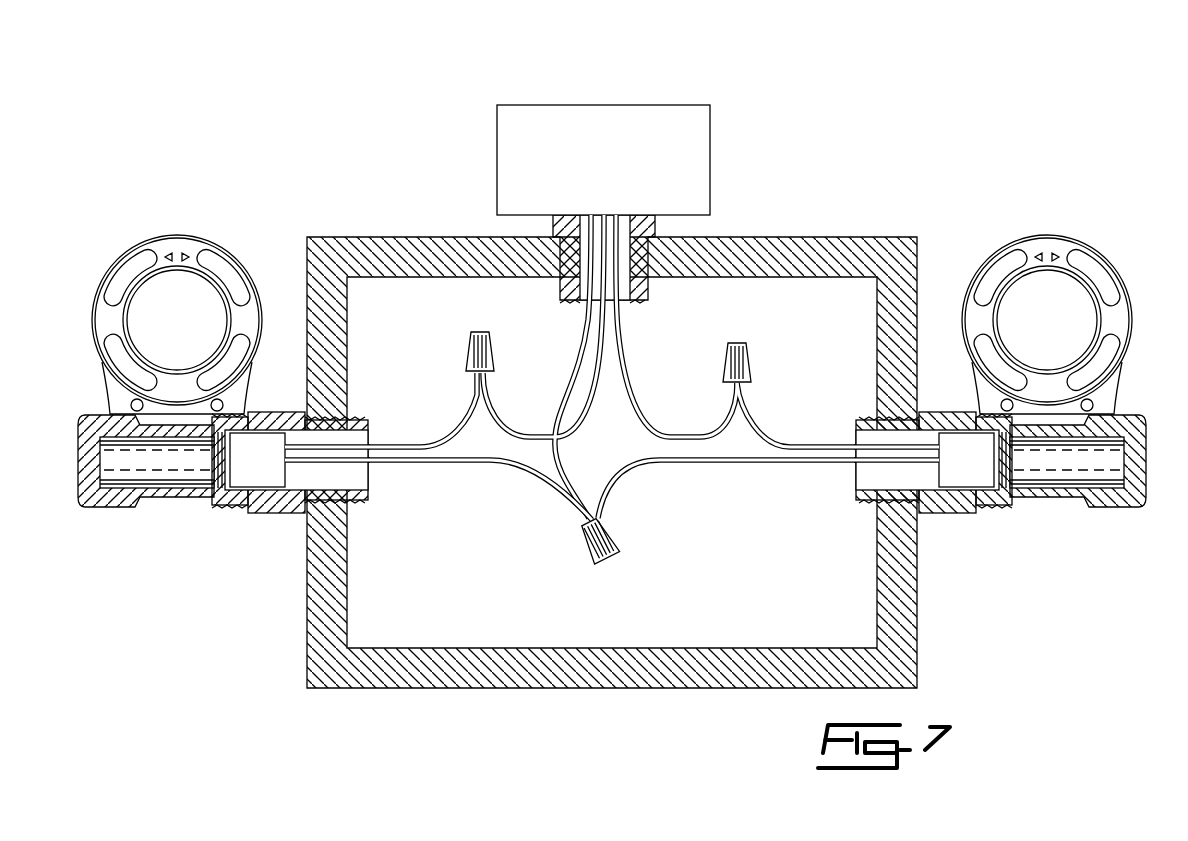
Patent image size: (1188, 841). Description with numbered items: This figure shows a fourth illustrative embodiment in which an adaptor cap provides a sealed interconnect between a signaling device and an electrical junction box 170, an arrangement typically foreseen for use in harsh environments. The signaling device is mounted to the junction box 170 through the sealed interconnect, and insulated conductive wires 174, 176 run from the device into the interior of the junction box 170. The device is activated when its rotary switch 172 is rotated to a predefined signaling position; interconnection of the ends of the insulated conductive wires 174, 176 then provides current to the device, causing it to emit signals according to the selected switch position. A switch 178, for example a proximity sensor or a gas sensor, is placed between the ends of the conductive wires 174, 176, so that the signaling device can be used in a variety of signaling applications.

The electrical junction box 170 is at (405, 237).
The rotary switch 172 is at (163, 256).
The insulated conductive wire 174 is at (437, 466).
The insulated conductive wire 176 is at (410, 446).
The switch 178 is at (713, 165).